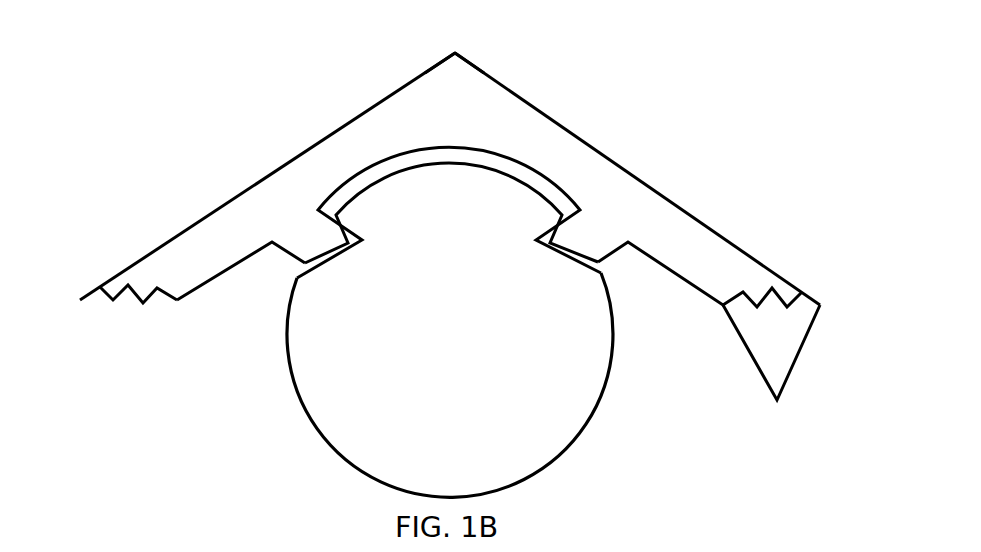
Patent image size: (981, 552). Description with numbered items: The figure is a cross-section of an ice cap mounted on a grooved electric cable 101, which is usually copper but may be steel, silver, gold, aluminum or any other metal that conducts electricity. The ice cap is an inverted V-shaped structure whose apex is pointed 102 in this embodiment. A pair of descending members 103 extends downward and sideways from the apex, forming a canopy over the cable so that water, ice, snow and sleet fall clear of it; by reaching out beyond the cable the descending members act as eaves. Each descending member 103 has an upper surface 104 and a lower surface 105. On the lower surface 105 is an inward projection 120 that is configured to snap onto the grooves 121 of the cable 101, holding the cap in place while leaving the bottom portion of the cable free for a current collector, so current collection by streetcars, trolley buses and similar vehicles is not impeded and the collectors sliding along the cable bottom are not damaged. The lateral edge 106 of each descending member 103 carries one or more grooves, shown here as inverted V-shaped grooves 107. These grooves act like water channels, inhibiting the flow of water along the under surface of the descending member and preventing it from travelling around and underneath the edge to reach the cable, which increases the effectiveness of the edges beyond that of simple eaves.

The grooved electric cable 101 is at (533, 455).
The pointed apex 102 is at (455, 53).
The descending members 103 is at (333, 160).
The upper surface 104 is at (697, 207).
The lower surface 105 is at (225, 282).
The lateral edge 106 is at (771, 371).
The inverted V-shaped groove 107 is at (102, 290).
The inward projection 120 is at (298, 242).
The grooves of the cable 121 is at (348, 245).